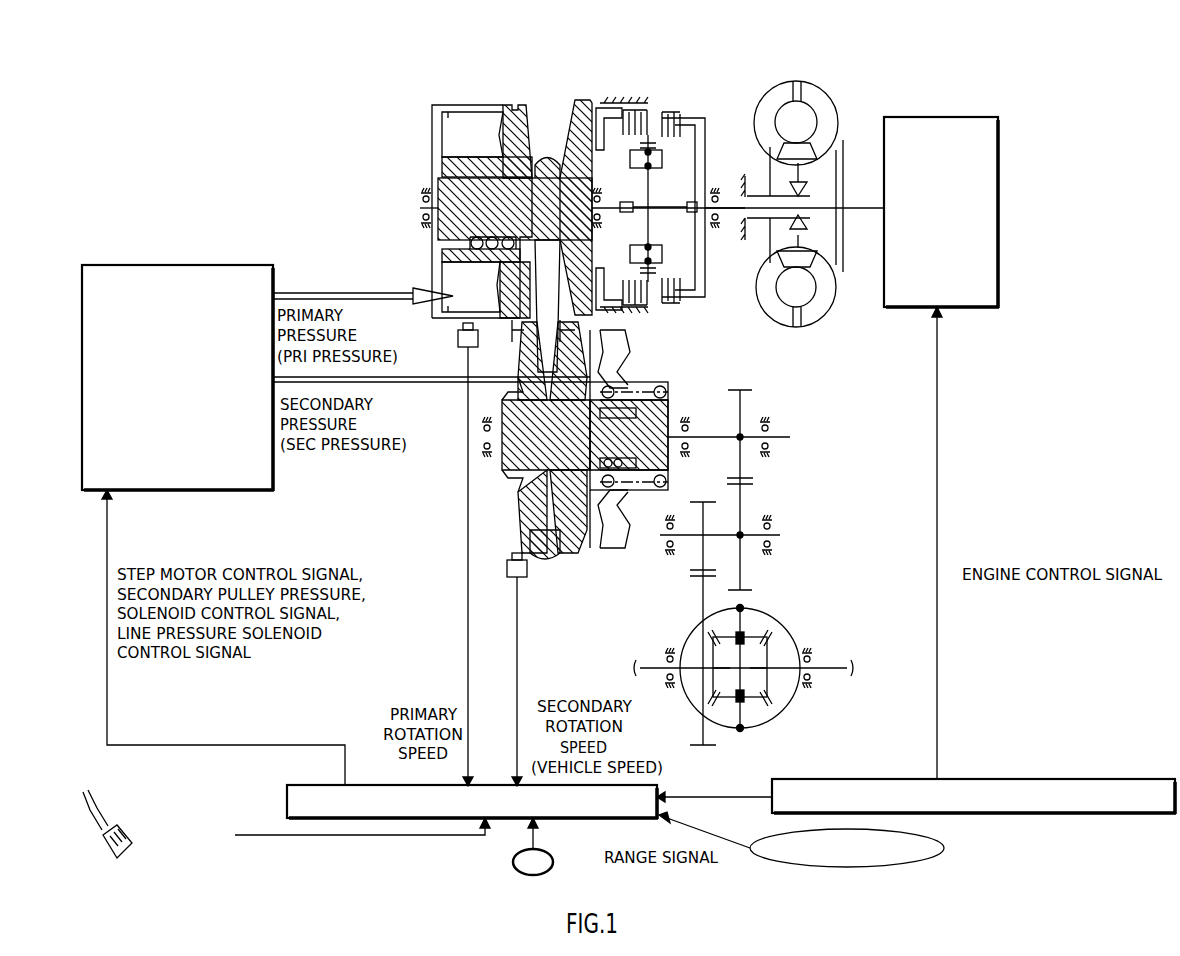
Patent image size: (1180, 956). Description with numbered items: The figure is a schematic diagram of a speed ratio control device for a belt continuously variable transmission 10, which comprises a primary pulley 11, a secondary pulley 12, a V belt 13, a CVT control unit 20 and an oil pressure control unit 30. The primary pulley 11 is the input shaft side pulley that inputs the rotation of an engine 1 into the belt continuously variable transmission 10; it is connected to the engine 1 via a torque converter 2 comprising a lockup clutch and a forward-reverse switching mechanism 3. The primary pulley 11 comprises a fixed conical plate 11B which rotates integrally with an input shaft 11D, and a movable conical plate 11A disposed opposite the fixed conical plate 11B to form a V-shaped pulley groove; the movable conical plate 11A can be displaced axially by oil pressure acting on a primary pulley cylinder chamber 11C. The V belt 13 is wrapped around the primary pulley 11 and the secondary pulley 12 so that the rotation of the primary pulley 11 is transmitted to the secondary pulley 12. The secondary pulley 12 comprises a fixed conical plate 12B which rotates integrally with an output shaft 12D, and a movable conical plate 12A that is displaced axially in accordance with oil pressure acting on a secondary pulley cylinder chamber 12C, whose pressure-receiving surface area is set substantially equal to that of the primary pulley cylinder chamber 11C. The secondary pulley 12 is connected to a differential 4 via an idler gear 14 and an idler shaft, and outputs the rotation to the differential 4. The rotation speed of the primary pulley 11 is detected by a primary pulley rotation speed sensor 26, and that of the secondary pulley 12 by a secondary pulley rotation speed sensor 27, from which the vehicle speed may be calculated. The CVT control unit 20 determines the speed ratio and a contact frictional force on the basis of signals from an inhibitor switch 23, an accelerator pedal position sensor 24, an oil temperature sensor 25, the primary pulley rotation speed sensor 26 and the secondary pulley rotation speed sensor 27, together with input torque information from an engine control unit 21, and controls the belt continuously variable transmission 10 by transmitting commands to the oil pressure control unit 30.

The engine 1 is at (913, 117).
The torque converter 2 is at (800, 75).
The forward-reverse switching mechanism 3 is at (628, 98).
The differential 4 is at (783, 618).
The belt continuously variable transmission 10 is at (500, 98).
The primary pulley 11 is at (576, 97).
The movable conical plate 11A is at (520, 106).
The fixed conical plate 11B is at (590, 100).
The primary pulley cylinder chamber 11C is at (468, 115).
The input shaft 11D is at (735, 212).
The secondary pulley 12 is at (642, 358).
The movable conical plate 12A is at (573, 546).
The fixed conical plate 12B is at (523, 498).
The secondary pulley cylinder chamber 12C is at (592, 533).
The output shaft 12D is at (712, 432).
The V belt 13 is at (560, 312).
The idler gear 14 is at (745, 505).
The CVT control unit 20 is at (472, 790).
The engine control unit 21 is at (974, 785).
The inhibitor switch 23 is at (944, 848).
The accelerator pedal position sensor 24 is at (104, 808).
The oil temperature sensor 25 is at (554, 846).
The primary pulley rotation speed sensor 26 is at (458, 339).
The secondary pulley rotation speed sensor 27 is at (507, 566).
The oil pressure control unit 30 is at (178, 365).